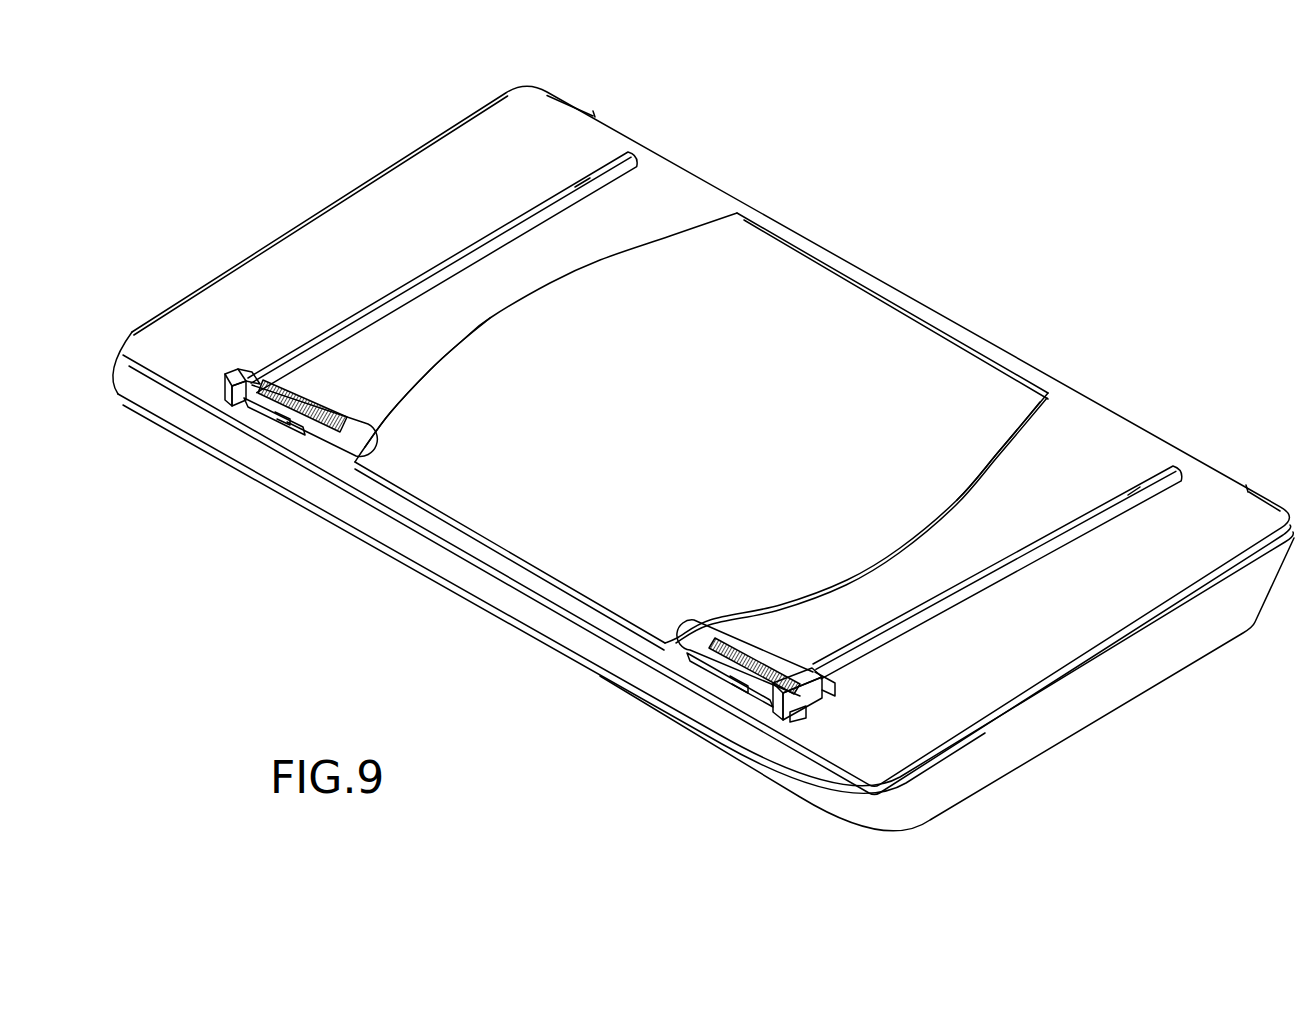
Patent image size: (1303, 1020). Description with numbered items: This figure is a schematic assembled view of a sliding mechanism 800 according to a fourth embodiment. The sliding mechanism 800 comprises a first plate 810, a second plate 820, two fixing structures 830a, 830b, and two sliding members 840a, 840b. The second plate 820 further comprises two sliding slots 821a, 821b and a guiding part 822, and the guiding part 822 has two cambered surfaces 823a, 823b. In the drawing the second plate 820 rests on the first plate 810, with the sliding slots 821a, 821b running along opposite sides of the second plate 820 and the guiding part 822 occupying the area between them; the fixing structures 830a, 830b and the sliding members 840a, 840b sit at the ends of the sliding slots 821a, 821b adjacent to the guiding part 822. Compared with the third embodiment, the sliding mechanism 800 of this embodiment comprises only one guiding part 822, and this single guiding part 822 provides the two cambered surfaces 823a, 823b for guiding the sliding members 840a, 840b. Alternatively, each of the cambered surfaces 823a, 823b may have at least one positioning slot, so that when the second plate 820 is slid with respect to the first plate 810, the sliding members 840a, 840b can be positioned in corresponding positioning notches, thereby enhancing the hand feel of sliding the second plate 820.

The sliding mechanism 800 is at (1048, 146).
The first plate 810 is at (1195, 640).
The second plate 820 is at (1115, 440).
The sliding slot 821a is at (512, 226).
The sliding slot 821b is at (985, 580).
The guiding part 822 is at (665, 260).
The cambered surface 823a is at (402, 393).
The cambered surface 823b is at (1027, 422).
The fixing structure 830a is at (252, 378).
The fixing structure 830b is at (805, 700).
The sliding member 840a is at (333, 379).
The sliding member 840b is at (787, 648).